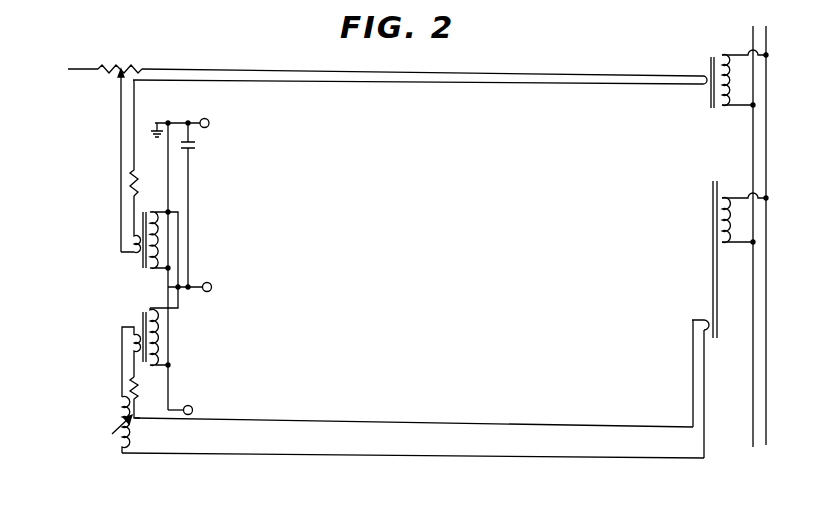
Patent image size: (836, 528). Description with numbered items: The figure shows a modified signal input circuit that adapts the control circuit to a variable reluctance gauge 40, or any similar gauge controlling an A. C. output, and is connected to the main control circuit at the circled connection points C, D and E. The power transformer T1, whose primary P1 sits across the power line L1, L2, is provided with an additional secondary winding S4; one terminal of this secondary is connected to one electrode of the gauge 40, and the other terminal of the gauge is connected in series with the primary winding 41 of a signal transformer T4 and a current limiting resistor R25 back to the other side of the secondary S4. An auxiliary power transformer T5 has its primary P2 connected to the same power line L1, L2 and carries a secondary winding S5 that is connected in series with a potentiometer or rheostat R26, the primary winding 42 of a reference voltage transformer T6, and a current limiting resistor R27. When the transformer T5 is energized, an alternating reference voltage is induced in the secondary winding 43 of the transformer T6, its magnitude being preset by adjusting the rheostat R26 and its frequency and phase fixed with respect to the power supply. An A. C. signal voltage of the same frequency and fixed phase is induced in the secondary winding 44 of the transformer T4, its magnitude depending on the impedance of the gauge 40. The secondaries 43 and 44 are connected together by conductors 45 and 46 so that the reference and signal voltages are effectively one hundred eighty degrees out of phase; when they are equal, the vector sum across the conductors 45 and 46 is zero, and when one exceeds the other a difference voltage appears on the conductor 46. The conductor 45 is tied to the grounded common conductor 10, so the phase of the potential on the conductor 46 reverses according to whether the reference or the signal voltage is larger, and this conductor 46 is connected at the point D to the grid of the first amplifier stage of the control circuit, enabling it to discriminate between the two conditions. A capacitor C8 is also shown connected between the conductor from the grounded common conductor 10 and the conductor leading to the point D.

The grounded common conductor 10 is at (173, 122).
The variable reluctance gauge 40 is at (118, 441).
The primary winding of signal transformer T4 41 is at (130, 340).
The primary winding of reference voltage transformer T6 42 is at (131, 243).
The secondary winding of transformer T6 43 is at (162, 234).
The secondary winding of signal transformer T4 44 is at (162, 340).
The conductor 45 is at (166, 283).
The conductor 46 is at (178, 262).
The current limiting resistor R25 is at (146, 393).
The potentiometer or rheostat R26 is at (150, 57).
The current limiting resistor R27 is at (137, 180).
The capacitor C8 is at (194, 146).
The power transformer T1 is at (718, 292).
The signal transformer T4 is at (144, 316).
The auxiliary power transformer T5 is at (711, 58).
The reference voltage transformer T6 is at (144, 212).
The primary winding of transformer T1 P1 is at (730, 216).
The primary of auxiliary power transformer T5 P2 is at (731, 80).
The secondary winding of power transformer T1 S4 is at (703, 320).
The secondary winding of auxiliary power transformer T5 S5 is at (702, 83).
The power line L1 is at (771, 227).
The power line L2 is at (748, 228).
The connection point C is at (204, 124).
The connection point D is at (190, 288).
The connection point E is at (180, 411).